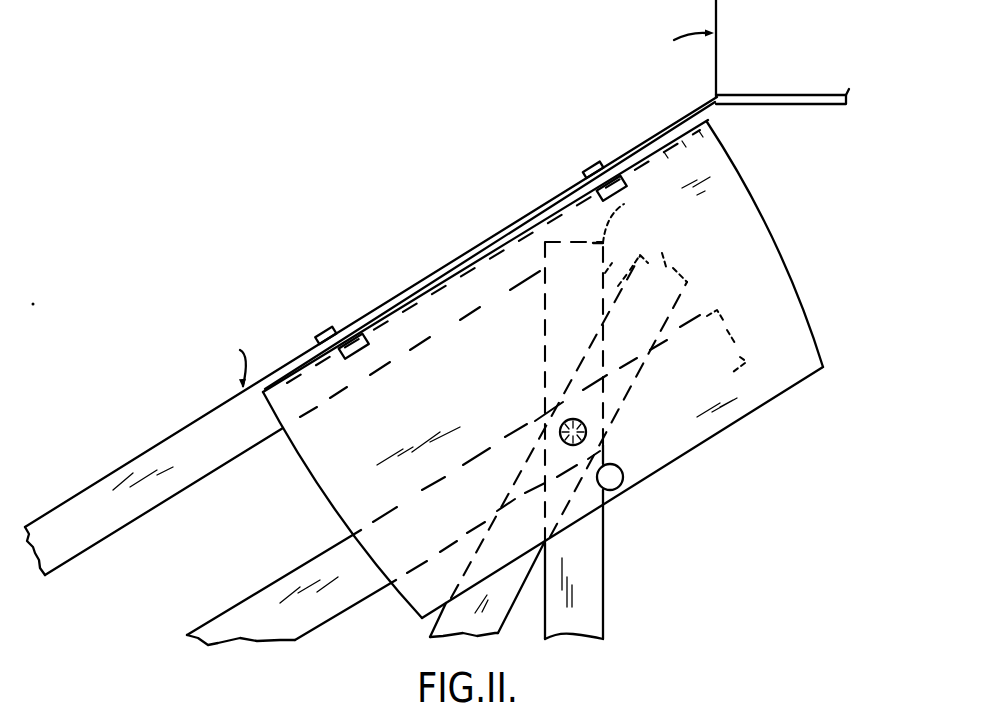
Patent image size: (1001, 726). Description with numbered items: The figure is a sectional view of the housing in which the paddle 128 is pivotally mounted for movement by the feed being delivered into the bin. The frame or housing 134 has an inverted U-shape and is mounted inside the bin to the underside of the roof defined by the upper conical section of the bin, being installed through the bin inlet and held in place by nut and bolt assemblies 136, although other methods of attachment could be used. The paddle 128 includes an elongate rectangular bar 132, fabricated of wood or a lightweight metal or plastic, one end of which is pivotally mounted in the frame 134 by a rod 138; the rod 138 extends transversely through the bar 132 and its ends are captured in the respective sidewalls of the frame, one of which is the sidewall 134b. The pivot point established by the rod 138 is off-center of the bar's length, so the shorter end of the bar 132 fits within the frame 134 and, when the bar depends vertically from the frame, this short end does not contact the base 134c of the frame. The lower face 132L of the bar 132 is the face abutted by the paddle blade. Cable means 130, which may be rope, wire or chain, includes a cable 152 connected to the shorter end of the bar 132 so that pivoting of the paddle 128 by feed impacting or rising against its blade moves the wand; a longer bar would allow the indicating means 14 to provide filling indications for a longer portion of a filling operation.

The means 14 is at (250, 275).
The paddle 128 is at (681, 563).
The cable means 130 is at (193, 464).
The bar 132 is at (742, 310).
The lower face of the bar 132L is at (737, 380).
The frame or housing 134 is at (316, 488).
The sidewall of the frame 134b is at (738, 428).
The base of the frame 134c is at (437, 284).
The nut and bolt assemblies 136 is at (577, 168).
The rod 138 is at (587, 432).
The cable 152 is at (437, 334).